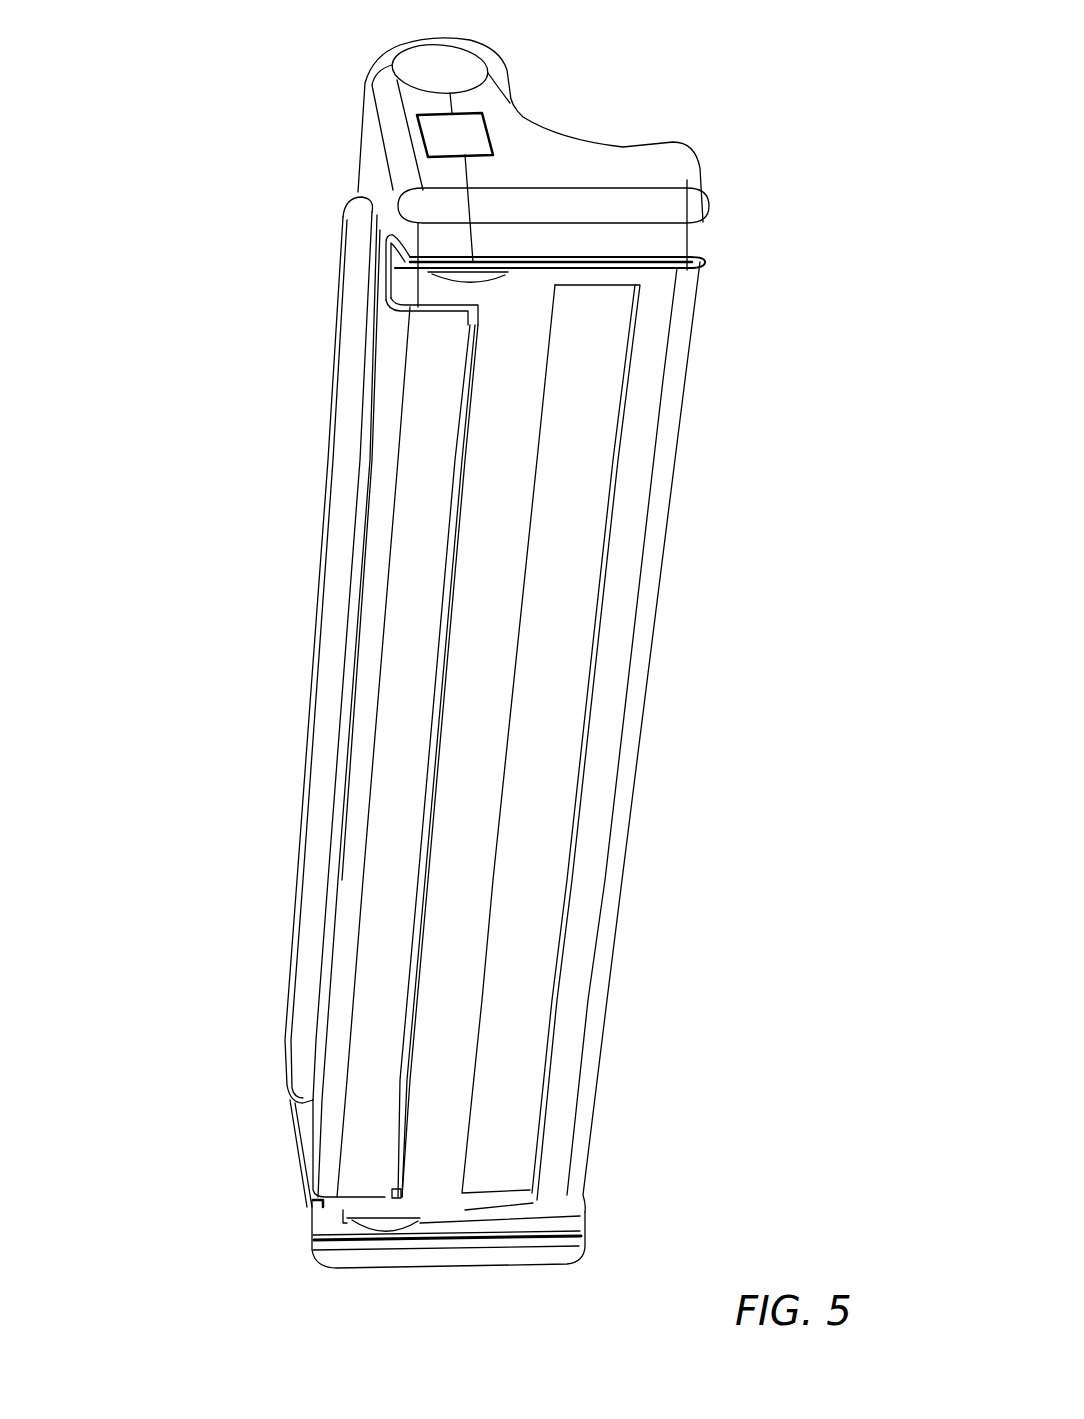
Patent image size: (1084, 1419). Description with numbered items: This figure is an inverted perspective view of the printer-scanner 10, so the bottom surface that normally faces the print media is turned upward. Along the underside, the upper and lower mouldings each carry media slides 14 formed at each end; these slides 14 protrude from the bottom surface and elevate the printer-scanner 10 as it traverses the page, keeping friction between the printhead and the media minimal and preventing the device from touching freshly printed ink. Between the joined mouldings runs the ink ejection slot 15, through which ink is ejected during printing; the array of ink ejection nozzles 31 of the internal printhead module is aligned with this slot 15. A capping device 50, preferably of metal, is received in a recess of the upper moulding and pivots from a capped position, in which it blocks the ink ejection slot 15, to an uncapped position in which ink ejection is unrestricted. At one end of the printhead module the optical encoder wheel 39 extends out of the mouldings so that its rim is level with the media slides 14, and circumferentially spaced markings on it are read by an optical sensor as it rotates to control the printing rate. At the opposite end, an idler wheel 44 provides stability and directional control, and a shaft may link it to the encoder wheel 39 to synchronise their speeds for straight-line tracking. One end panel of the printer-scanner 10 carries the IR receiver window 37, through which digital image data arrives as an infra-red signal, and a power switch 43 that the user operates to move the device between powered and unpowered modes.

The printer-scanner 10 is at (215, 545).
The media slides 14 is at (520, 1240).
The ink ejection slot 15 is at (465, 400).
The ink ejection nozzles 31 is at (443, 733).
The IR receiver window 37 is at (420, 62).
The optical encoder wheel 39 is at (458, 279).
The power switch 43 is at (470, 132).
The idler wheel 44 is at (393, 1235).
The capping device 50 is at (355, 746).